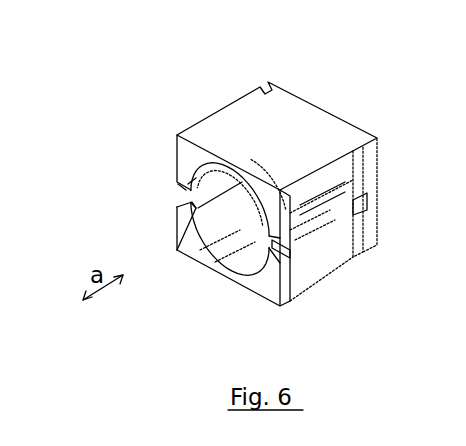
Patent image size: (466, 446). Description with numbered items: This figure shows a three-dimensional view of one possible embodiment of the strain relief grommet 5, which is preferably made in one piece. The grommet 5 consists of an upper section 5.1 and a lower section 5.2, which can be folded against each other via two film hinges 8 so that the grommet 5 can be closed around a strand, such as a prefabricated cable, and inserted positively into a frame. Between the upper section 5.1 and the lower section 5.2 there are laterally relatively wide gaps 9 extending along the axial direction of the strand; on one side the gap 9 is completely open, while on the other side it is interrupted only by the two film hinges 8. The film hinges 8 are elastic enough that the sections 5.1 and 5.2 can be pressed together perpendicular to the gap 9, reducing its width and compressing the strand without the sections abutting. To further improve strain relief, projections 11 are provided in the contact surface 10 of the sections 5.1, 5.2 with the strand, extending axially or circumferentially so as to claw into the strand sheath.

The strain relief grommet 5 is at (250, 123).
The upper section 5.1 is at (223, 142).
The lower section 5.2 is at (190, 250).
The film hinge 8 is at (282, 258).
The gap 9 is at (188, 192).
The contact surface 10 is at (217, 245).
The projection 11 is at (218, 235).